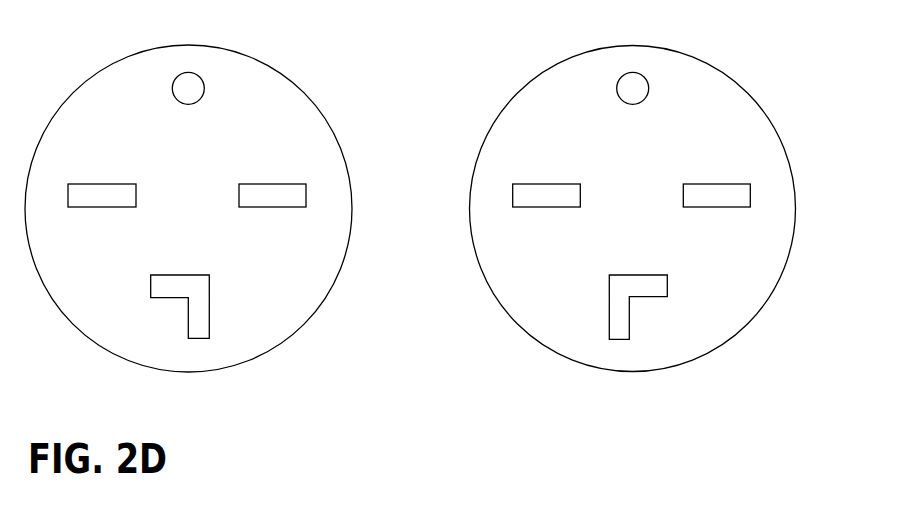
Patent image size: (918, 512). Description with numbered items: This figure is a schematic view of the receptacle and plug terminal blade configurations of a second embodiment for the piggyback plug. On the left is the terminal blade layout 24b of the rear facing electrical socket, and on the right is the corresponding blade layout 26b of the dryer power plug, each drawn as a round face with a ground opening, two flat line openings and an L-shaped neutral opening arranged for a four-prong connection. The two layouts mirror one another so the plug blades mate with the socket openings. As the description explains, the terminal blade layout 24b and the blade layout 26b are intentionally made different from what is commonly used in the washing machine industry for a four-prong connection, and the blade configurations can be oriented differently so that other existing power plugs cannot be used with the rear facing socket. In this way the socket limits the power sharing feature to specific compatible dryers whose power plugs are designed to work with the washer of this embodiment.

The terminal blade layout of the rear facing electrical socket 24b is at (188, 200).
The blade layout of the dryer power plug 26b is at (633, 192).